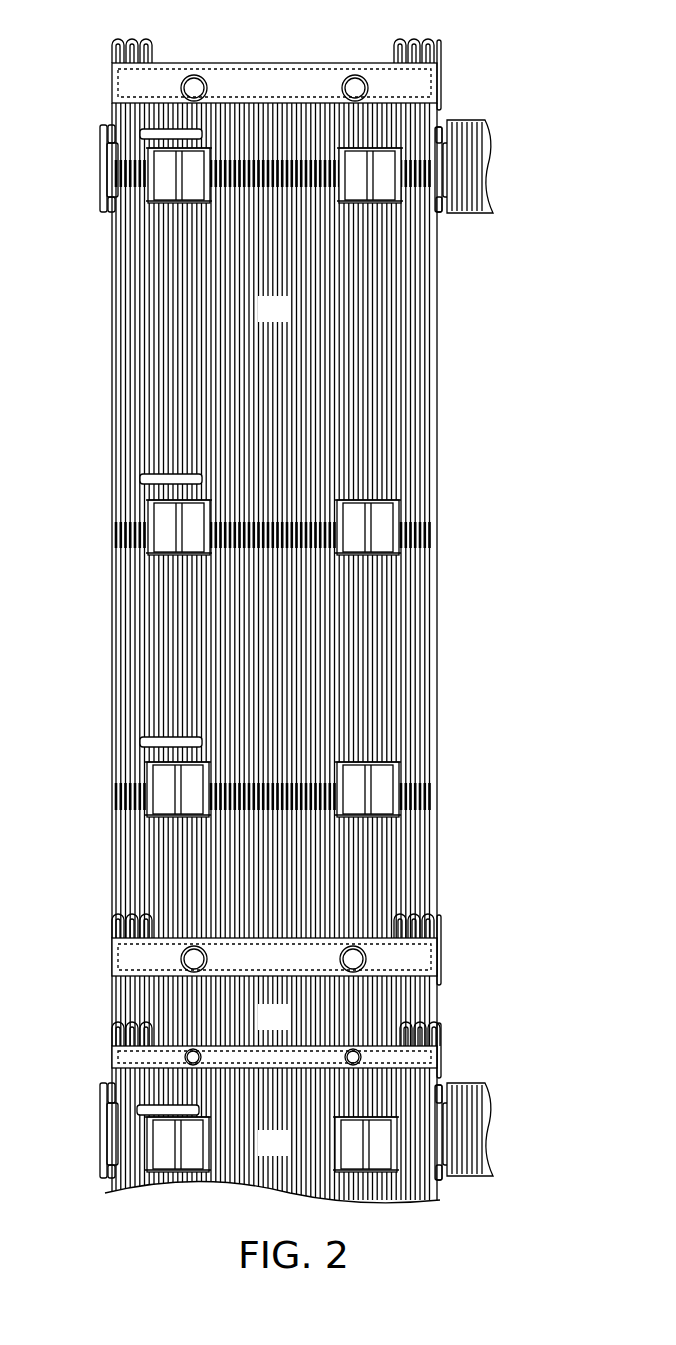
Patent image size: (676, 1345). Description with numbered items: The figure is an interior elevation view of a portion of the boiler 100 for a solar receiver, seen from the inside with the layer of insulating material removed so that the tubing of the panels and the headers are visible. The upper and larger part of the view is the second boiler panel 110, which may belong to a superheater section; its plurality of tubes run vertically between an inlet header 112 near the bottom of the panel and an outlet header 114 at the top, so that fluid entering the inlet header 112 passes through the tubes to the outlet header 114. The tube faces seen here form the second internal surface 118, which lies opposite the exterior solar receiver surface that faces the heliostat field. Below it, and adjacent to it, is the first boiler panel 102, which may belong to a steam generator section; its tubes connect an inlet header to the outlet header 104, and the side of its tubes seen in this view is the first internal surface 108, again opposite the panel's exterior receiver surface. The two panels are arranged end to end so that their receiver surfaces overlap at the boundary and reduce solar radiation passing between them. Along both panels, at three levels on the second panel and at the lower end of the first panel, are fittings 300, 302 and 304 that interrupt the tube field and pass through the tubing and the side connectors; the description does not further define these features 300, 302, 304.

The boiler 100 is at (293, 612).
The second boiler panel 110 is at (110, 385).
The outlet header 114 is at (266, 78).
The second internal surface 118 is at (290, 320).
The inlet header 112 is at (290, 970).
The first boiler panel 102 is at (290, 1028).
The outlet header 104 is at (110, 1058).
The first internal surface 108 is at (290, 1154).
The upper connector 300 is at (150, 192).
The middle connector 302 is at (150, 553).
The lower connector 304 is at (150, 763).